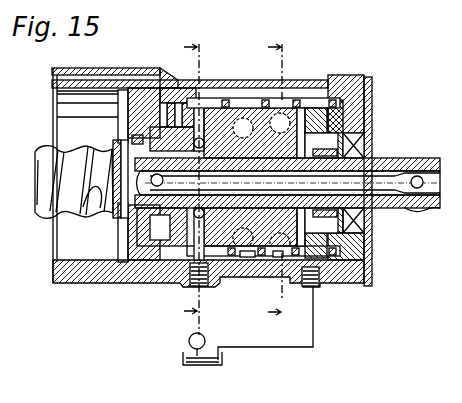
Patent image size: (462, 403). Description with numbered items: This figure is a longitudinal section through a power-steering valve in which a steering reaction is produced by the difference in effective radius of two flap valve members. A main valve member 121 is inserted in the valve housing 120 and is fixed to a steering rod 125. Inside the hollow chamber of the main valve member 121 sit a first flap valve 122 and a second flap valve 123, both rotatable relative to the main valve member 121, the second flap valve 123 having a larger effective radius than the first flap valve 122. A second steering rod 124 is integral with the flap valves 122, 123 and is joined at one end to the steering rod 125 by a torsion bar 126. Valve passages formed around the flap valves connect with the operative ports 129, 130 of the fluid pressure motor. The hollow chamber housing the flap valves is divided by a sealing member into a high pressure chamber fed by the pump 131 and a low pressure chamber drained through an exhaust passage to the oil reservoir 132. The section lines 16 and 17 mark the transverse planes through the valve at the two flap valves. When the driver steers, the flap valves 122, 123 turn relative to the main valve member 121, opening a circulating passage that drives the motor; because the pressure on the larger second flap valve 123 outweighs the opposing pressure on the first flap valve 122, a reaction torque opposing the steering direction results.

The section line 16-16 / pump inlet pipe 16 is at (201, 185).
The section line 17-17 / drain pipe 17 is at (286, 175).
The valve housing 120 is at (333, 78).
The main valve member 121 is at (214, 97).
The first flap valve 122 is at (194, 112).
The second flap valve 123 is at (257, 118).
The steering rod 124 is at (384, 160).
The steering rod 125 is at (45, 188).
The torsion bar 126 is at (378, 198).
The operative port 129 is at (244, 258).
The operative port 130 is at (290, 86).
The pump 131 is at (189, 339).
The oil reservoir 132 is at (225, 358).